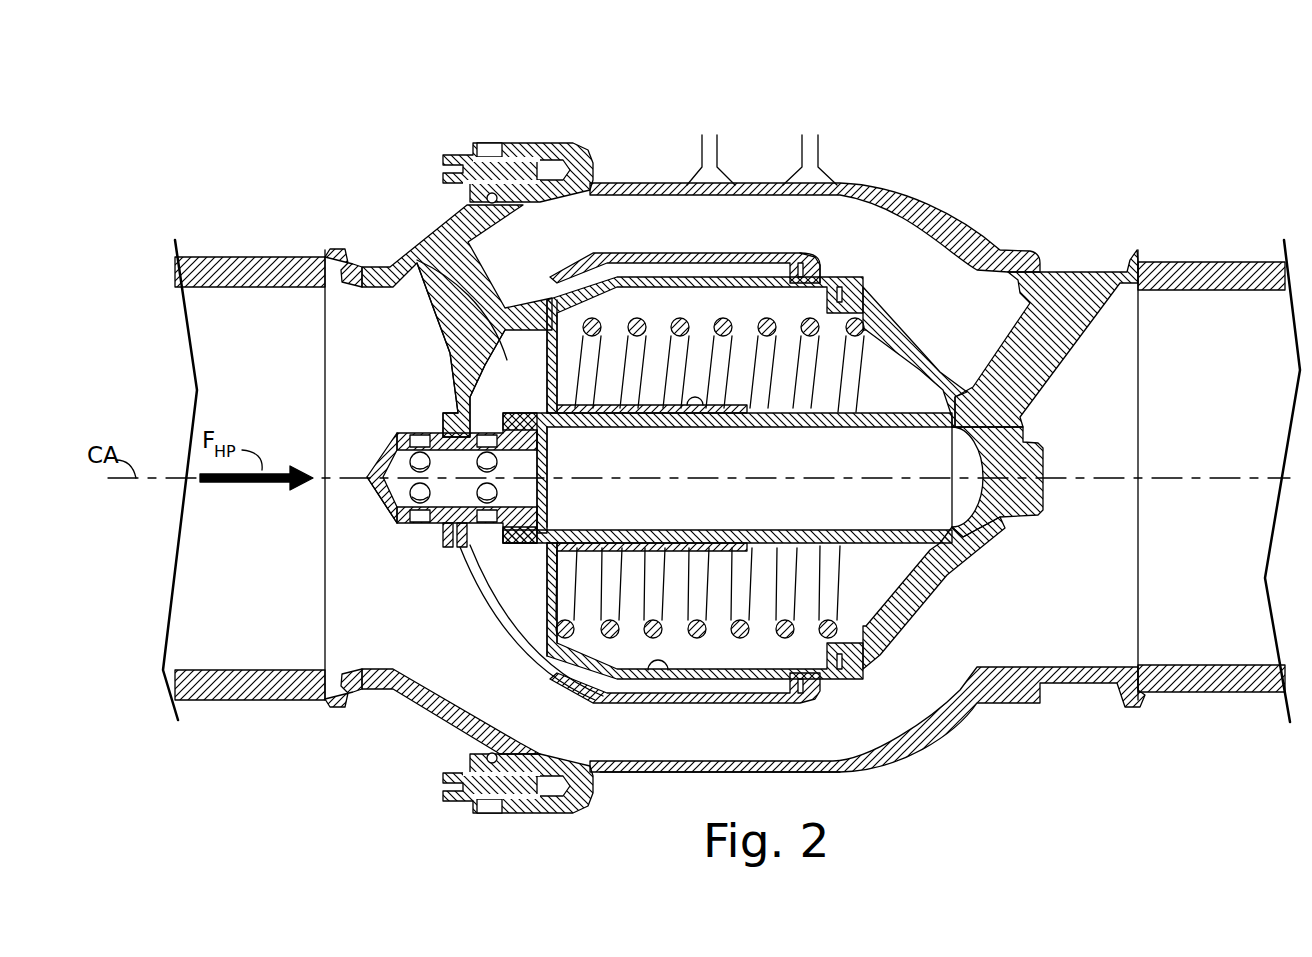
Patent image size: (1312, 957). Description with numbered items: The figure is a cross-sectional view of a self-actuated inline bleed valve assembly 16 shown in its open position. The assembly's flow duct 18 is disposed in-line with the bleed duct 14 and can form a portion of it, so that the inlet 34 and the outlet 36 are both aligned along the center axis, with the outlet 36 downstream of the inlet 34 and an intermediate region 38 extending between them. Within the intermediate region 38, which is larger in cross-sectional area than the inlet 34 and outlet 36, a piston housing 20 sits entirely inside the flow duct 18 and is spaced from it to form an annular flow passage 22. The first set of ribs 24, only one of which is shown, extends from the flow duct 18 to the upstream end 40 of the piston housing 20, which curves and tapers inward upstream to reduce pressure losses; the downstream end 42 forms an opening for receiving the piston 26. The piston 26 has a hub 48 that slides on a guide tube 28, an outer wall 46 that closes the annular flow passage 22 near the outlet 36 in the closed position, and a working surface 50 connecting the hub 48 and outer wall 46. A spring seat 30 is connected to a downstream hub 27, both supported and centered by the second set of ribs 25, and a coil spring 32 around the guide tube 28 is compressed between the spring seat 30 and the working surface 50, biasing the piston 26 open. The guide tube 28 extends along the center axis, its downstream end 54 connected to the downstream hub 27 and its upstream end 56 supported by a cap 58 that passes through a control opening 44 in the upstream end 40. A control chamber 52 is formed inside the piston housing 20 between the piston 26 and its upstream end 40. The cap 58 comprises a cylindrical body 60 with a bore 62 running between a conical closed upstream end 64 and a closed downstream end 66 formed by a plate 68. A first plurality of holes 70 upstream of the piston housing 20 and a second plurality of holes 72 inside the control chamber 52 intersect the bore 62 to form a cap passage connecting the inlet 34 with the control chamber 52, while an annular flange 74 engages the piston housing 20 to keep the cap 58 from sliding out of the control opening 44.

The bleed duct 14 is at (246, 347).
The bleed valve assembly 16 is at (400, 125).
The flow duct 18 is at (879, 184).
The piston housing 20 is at (657, 252).
The annular flow passage 22 is at (701, 752).
The first set of ribs 24 is at (443, 243).
The second set of ribs 25 is at (1055, 332).
The piston 26 is at (755, 660).
The downstream hub 27 is at (1028, 505).
The guide tube 28 is at (870, 522).
The spring seat 30 is at (884, 327).
The spring 32 is at (725, 322).
The inlet 34 is at (325, 640).
The outlet 36 is at (1140, 443).
The intermediate region 38 is at (623, 774).
The upstream end 40 is at (458, 393).
The downstream end 42 is at (822, 265).
The control opening 44 is at (441, 537).
The outer wall 46 is at (650, 672).
The hub 48 is at (697, 410).
The working surface 50 is at (543, 630).
The control chamber 52 is at (410, 262).
The downstream end 54 is at (1023, 435).
The upstream end 56 is at (538, 545).
The cap 58 is at (355, 452).
The cylindrical body 60 is at (438, 522).
The bore 62 is at (453, 473).
The closed upstream end 64 is at (365, 488).
The closed downstream end 66 is at (550, 460).
The plate 68 is at (548, 474).
The first plurality of holes 70 is at (415, 440).
The second plurality of holes 72 is at (487, 523).
The annular flange 74 is at (456, 548).